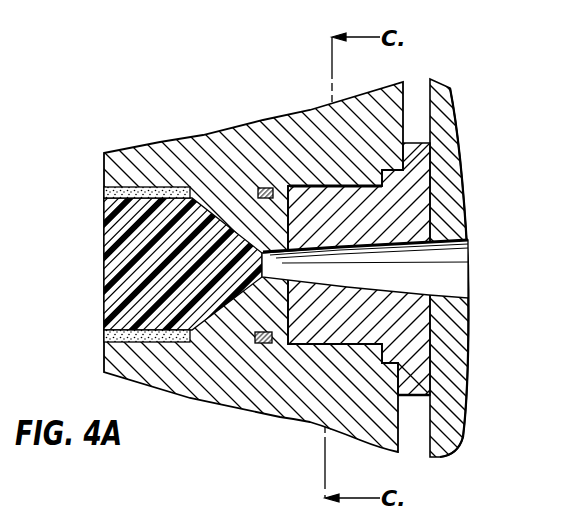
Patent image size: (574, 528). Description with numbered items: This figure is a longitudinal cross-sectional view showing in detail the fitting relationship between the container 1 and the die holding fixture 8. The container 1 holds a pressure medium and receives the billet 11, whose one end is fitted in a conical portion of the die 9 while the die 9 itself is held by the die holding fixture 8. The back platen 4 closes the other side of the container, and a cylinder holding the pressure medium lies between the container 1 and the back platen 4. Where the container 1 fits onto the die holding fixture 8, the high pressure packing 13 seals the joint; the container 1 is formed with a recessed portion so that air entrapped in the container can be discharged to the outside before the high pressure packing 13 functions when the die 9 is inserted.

The container 1 is at (149, 117).
The back platen 4 is at (455, 127).
The die holding fixture 8 is at (313, 192).
The die 9 is at (214, 200).
The billet 11 is at (120, 241).
The high pressure packing 13 is at (262, 187).